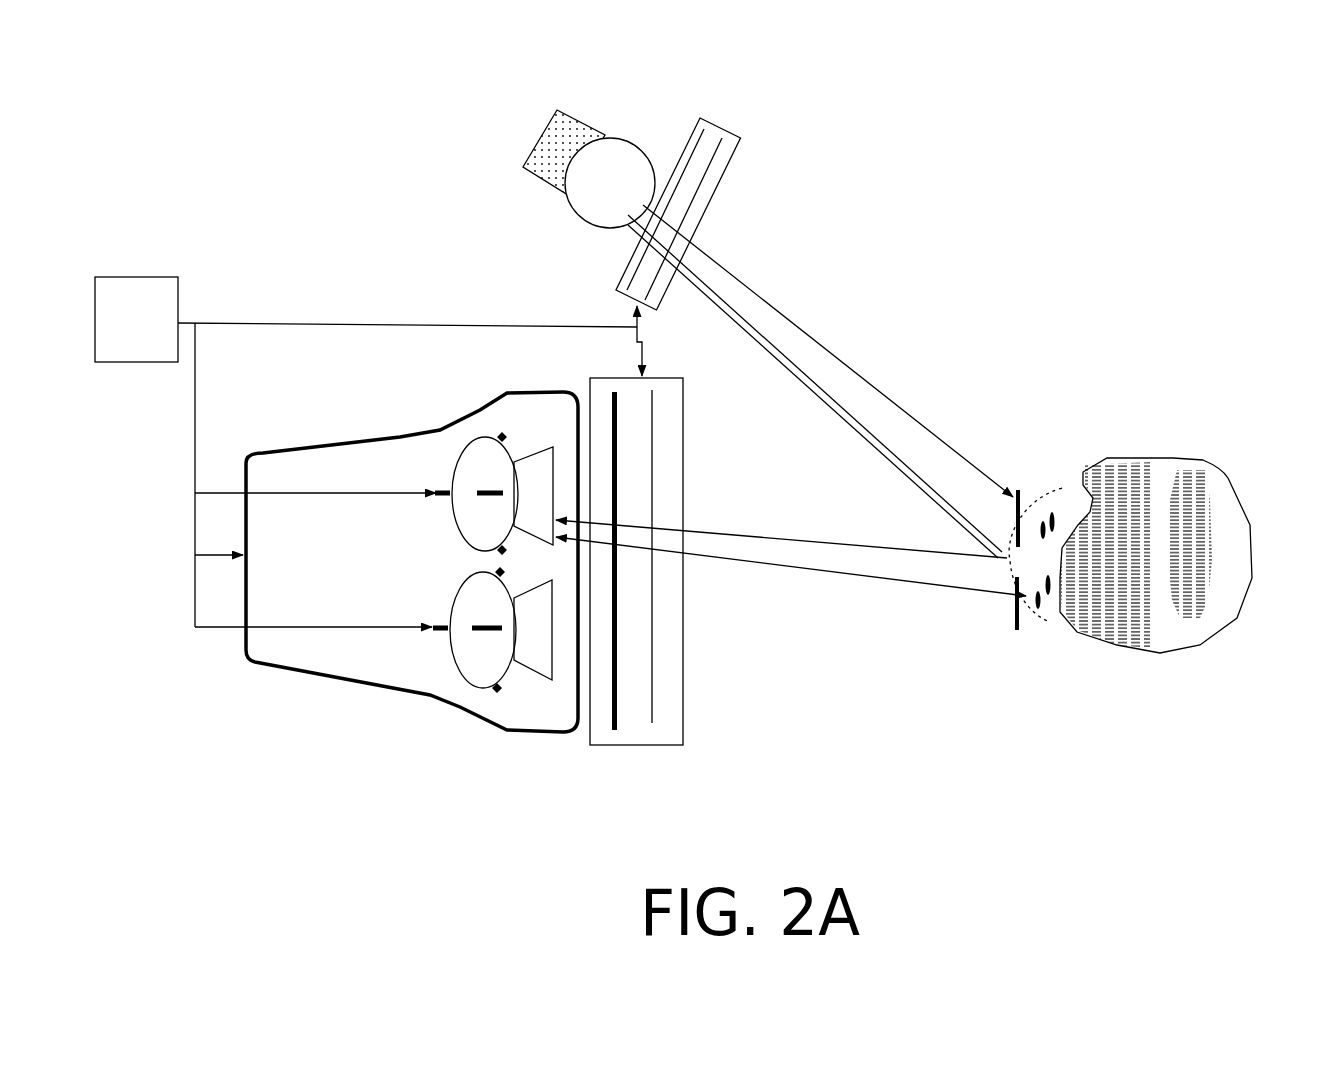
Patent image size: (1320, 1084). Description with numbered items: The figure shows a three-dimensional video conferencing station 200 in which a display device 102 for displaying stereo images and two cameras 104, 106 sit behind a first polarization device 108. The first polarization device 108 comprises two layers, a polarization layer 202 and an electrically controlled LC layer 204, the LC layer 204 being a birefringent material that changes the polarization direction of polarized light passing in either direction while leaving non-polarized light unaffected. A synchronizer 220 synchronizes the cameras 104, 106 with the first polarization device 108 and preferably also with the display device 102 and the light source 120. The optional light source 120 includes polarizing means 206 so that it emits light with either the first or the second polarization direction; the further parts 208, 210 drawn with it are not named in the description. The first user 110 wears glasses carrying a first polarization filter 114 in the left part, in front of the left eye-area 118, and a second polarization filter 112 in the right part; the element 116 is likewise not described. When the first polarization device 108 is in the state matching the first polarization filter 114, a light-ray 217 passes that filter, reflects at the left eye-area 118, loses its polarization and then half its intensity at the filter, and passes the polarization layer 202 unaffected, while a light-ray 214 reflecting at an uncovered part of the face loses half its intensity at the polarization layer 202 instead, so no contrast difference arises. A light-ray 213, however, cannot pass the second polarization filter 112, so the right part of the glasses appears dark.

The 3D video conferencing station 200 is at (967, 313).
The synchronizer 220 is at (133, 273).
The display device 102 is at (350, 457).
The camera 104 is at (488, 452).
The camera 106 is at (477, 657).
The first polarization device 108 is at (638, 737).
The polarization layer 202 is at (608, 724).
The LC layer 204 is at (648, 720).
The light source 120 is at (627, 150).
The polarizing means 206 is at (738, 137).
The plate layer 208 is at (680, 190).
The plate layer 210 is at (707, 177).
The light-ray 213 is at (885, 395).
The light-ray 214 is at (852, 418).
The light-ray 217 is at (864, 440).
The first user 110 is at (1213, 468).
The second polarization filter 112 is at (1018, 490).
The first polarization filter 114 is at (1012, 602).
The iris portion 116 is at (1045, 518).
The left eye-area 118 is at (1048, 602).